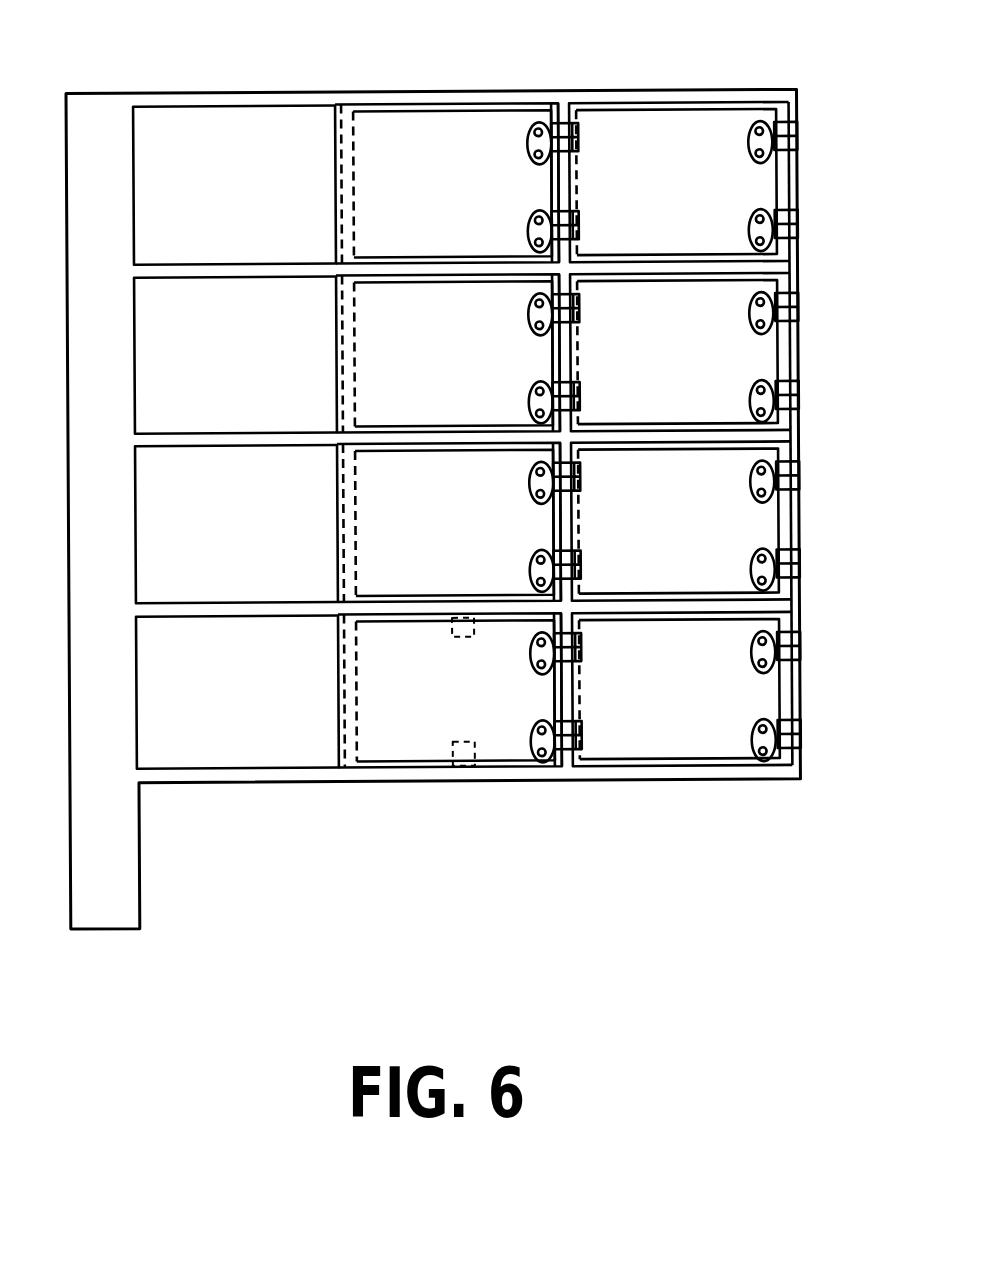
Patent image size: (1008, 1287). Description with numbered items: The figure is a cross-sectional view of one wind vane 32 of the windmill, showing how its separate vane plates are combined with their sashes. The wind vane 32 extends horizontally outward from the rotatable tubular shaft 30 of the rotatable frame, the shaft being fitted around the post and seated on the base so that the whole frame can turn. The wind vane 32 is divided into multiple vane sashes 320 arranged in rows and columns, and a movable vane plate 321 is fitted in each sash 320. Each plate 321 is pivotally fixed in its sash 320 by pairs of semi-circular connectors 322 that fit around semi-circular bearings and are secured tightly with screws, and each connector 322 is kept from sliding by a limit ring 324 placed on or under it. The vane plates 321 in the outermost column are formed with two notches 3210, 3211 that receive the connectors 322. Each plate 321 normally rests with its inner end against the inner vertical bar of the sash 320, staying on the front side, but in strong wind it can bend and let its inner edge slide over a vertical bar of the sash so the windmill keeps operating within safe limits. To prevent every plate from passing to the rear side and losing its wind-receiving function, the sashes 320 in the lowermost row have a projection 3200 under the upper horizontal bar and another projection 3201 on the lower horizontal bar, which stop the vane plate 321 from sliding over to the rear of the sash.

The rotatable tubular shaft 30 is at (127, 865).
The wind vane 32 is at (285, 803).
The vane sash 320 is at (719, 108).
The vane plate 321 is at (642, 130).
The semi-circular connector 322 is at (797, 143).
The limit ring 324 is at (792, 124).
The notch 3210 is at (582, 221).
The notch 3211 is at (586, 118).
The projection 3200 is at (456, 637).
The projection 3201 is at (465, 768).